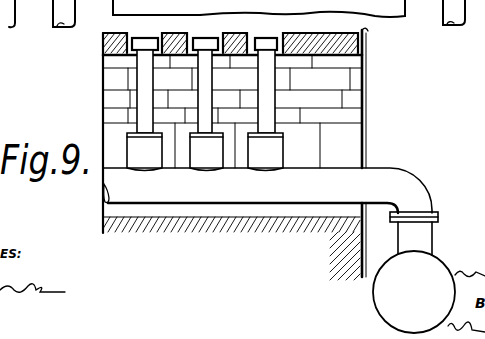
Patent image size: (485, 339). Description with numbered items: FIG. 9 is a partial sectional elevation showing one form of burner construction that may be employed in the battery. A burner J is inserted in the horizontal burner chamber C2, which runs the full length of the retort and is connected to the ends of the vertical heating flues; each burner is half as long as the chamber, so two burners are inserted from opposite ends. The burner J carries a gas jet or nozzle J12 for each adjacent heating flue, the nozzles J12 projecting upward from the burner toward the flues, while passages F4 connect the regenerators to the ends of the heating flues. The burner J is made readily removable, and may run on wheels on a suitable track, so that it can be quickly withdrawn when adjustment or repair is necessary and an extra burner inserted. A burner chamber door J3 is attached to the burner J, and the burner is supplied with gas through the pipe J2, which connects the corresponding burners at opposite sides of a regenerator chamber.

The passage F4 is at (262, 30).
The gas jet or nozzle J12 is at (145, 95).
The horizontal burner chamber C2 is at (350, 93).
The burner chamber door J3 is at (366, 130).
The burner J is at (270, 211).
The pipe J2 is at (414, 292).